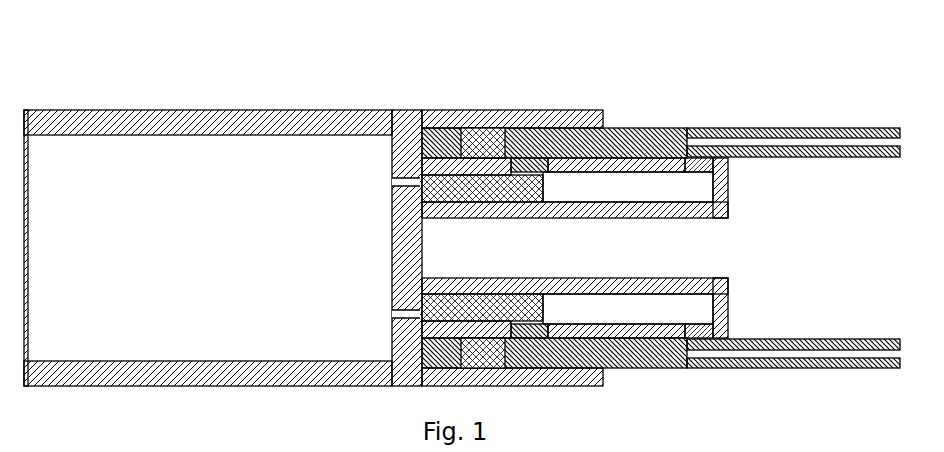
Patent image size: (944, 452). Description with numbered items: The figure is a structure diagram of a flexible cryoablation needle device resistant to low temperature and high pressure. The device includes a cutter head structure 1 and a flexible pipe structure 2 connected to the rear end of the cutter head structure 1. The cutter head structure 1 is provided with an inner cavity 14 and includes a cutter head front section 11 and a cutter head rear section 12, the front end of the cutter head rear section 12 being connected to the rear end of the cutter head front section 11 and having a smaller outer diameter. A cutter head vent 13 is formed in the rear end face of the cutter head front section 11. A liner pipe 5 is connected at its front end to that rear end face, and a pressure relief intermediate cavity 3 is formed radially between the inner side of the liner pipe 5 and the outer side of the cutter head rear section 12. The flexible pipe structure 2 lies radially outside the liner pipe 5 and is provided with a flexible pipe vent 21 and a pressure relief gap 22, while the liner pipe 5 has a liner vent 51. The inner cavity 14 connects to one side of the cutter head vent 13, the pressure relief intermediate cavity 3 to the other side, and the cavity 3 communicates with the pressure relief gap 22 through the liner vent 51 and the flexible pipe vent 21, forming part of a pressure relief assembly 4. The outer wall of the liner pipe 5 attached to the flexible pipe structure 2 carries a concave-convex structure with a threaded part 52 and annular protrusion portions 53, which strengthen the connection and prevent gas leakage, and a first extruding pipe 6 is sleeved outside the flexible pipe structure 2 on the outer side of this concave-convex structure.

The cutter head structure 1 is at (355, 100).
The cutter head front section 11 is at (277, 120).
The cutter head rear section 12 is at (585, 200).
The cutter head vent 13 is at (405, 178).
The inner cavity 14 is at (172, 165).
The flexible pipe structure 2 is at (669, 123).
The flexible pipe vent 21 is at (689, 166).
The pressure relief gap 22 is at (793, 130).
The pressure relief intermediate cavity 3 is at (657, 185).
The pressure relief assembly 4 is at (499, 128).
The liner pipe 5 is at (630, 158).
The liner vent 51 is at (728, 173).
The threaded part 52 is at (457, 128).
The annular protrusion portion 53 is at (535, 128).
The first extruding pipe 6 is at (598, 112).